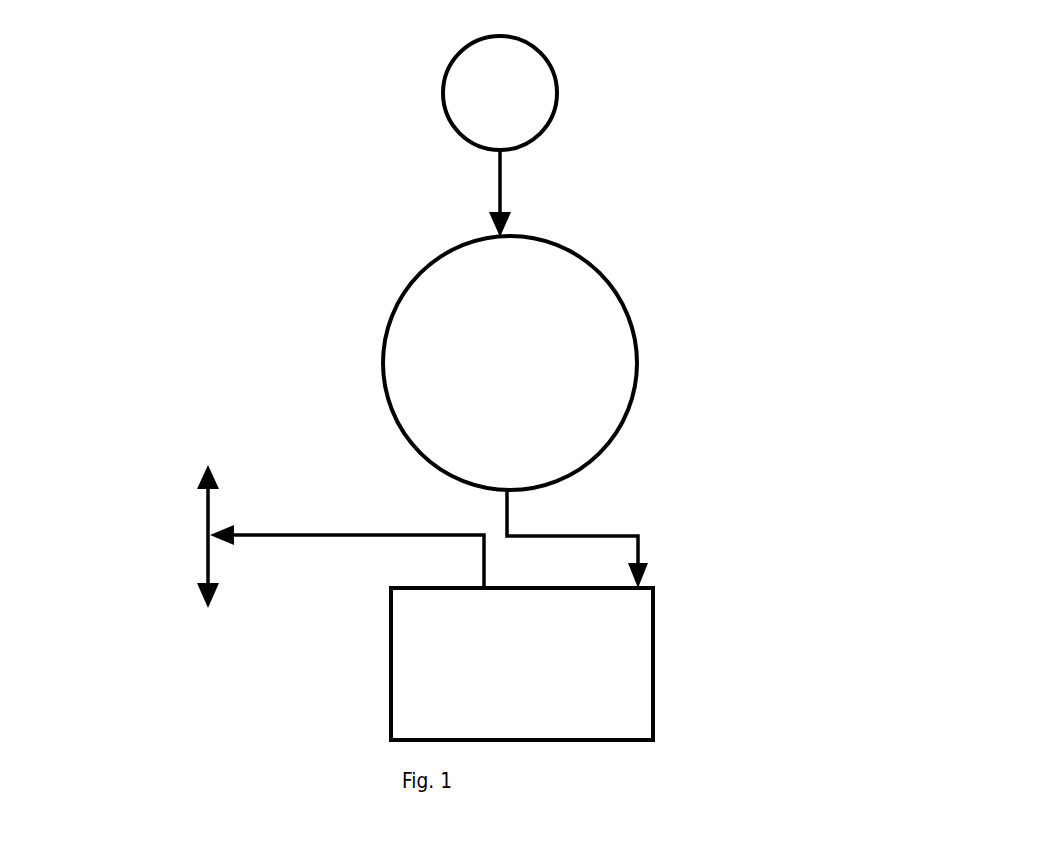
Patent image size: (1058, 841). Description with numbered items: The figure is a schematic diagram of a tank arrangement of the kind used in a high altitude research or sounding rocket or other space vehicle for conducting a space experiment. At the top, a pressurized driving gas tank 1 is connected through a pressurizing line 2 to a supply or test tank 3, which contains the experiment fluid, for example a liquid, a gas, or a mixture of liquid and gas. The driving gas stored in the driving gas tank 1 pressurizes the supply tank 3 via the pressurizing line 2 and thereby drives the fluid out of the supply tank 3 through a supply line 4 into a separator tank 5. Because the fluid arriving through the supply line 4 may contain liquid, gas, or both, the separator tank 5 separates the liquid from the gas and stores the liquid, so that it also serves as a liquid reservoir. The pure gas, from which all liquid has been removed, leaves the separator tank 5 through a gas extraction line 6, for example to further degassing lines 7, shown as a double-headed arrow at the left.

The pressurized driving gas tank 1 is at (500, 95).
The pressurizing line 2 is at (505, 195).
The supply or test tank 3 is at (533, 373).
The supply line 4 is at (580, 537).
The separator tank 5 is at (567, 647).
The gas extraction line 6 is at (338, 535).
The degassing lines 7 is at (208, 525).